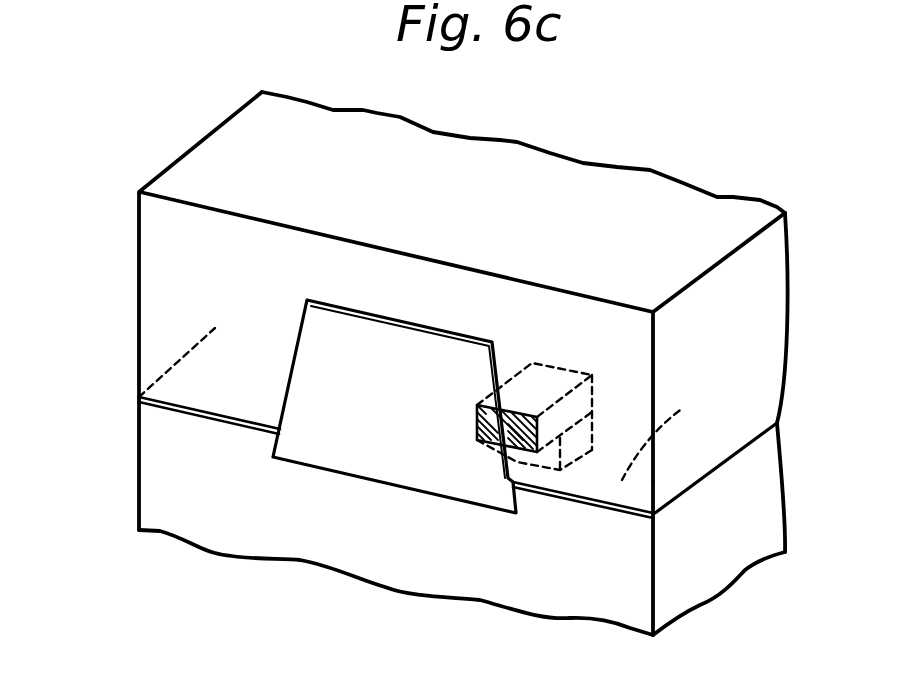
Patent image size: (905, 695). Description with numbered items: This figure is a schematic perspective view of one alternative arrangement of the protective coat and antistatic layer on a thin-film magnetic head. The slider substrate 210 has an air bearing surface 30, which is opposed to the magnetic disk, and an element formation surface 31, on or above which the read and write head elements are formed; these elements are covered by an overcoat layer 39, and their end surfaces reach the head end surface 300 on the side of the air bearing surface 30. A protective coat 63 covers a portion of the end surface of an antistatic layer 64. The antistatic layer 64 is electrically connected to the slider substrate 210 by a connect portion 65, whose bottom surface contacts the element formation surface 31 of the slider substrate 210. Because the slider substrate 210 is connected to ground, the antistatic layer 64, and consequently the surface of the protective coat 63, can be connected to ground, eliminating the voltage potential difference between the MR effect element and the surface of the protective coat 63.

The head end surface 300 is at (160, 307).
The air bearing surface 30 is at (200, 456).
The overcoat layer 39 is at (758, 282).
The element formation surface 31 is at (683, 408).
The slider substrate 210 is at (757, 495).
The protective coat 63 is at (395, 357).
The antistatic layer 64 is at (540, 393).
The connect portion 65 is at (573, 447).